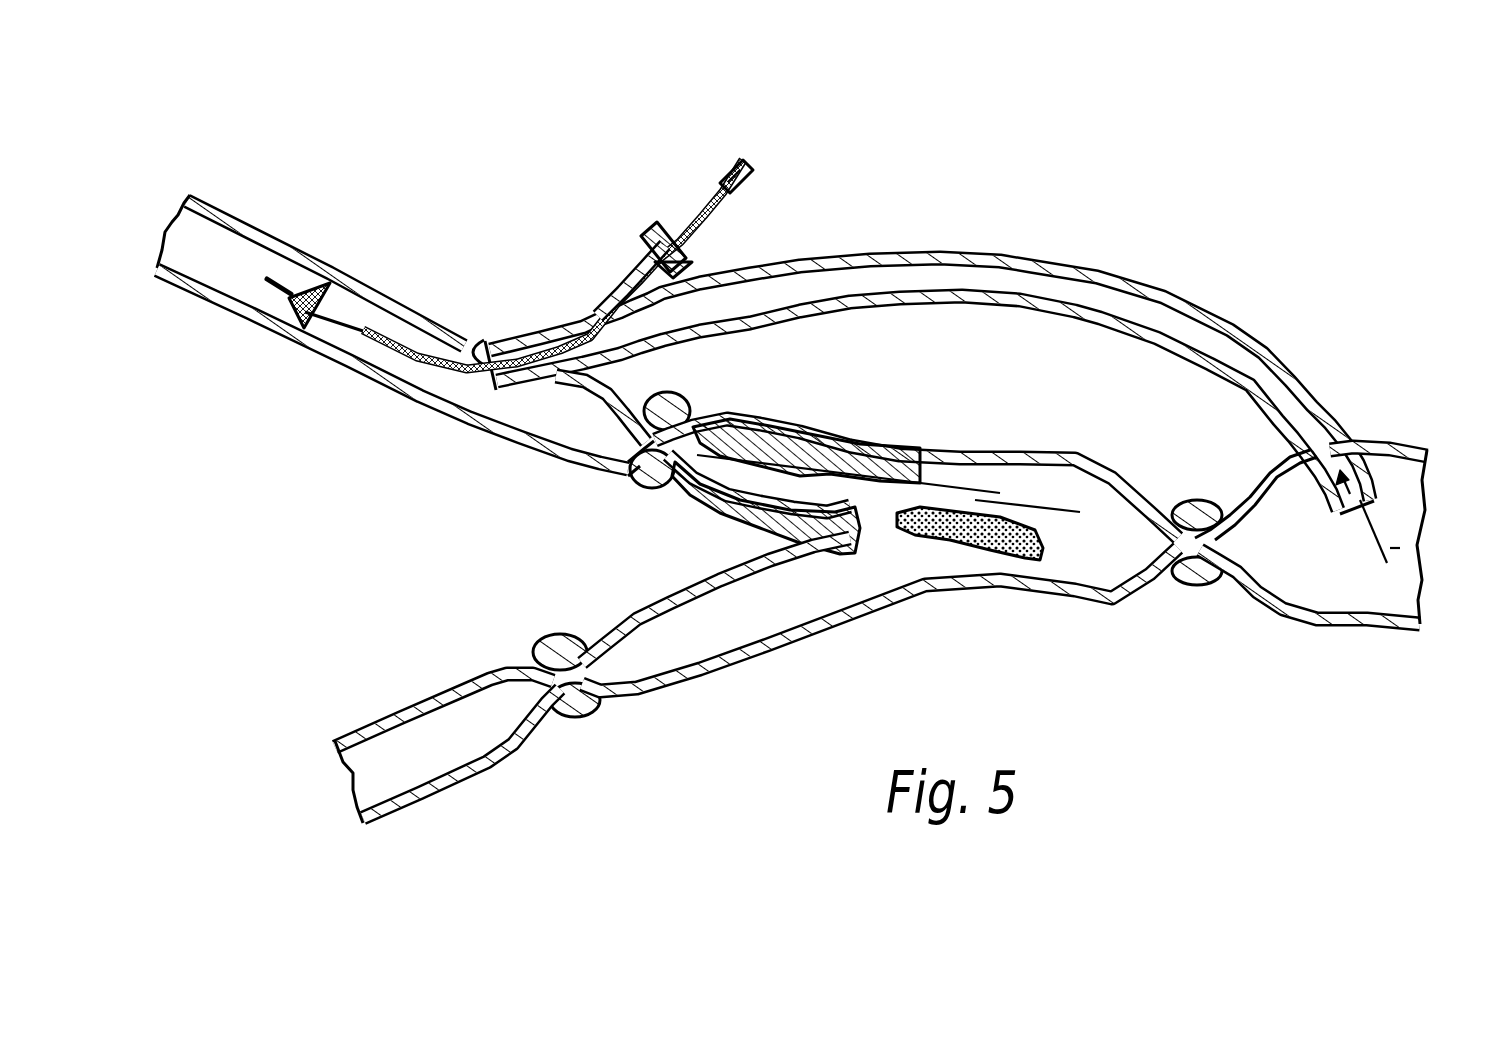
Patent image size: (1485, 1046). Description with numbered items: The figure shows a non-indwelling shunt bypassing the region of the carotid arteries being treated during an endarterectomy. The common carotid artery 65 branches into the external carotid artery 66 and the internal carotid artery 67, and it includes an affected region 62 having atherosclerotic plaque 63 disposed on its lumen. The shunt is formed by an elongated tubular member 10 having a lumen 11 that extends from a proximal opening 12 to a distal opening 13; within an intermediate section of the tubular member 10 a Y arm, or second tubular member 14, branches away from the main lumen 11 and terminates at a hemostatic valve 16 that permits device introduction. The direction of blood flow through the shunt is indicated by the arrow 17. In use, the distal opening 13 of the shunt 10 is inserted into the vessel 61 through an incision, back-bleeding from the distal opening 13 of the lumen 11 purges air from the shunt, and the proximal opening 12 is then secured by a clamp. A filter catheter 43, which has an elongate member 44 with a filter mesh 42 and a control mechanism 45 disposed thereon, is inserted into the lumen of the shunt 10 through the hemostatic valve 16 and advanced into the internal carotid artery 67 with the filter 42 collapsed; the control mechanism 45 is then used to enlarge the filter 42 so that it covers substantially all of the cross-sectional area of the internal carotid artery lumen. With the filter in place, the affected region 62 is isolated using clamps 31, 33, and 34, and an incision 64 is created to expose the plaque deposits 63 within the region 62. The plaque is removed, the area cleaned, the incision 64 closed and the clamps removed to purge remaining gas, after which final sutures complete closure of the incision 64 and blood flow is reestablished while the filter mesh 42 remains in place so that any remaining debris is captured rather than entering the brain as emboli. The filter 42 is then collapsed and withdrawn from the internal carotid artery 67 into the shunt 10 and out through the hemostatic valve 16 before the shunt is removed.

The elongated tubular member 10 is at (1112, 272).
The lumen 11 is at (974, 292).
The proximal opening 12 is at (1367, 500).
The distal opening 13 is at (467, 337).
The second tubular member 14 is at (627, 270).
The hemostatic valve 16 is at (657, 233).
The arrow 17 is at (1387, 550).
The clamp 31 is at (1197, 587).
The clamp 33 is at (643, 483).
The clamp 34 is at (563, 720).
The filter mesh 42 is at (307, 287).
The filter catheter 43 is at (697, 227).
The elongate member 44 is at (707, 197).
The control mechanism 45 is at (750, 180).
The vessel 61 is at (547, 479).
The affected region 62 is at (925, 450).
The atherosclerotic plaque 63 is at (733, 430).
The incision 64 is at (1041, 502).
The common carotid artery 65 is at (1327, 617).
The external carotid artery 66 is at (487, 760).
The internal carotid artery 67 is at (457, 417).